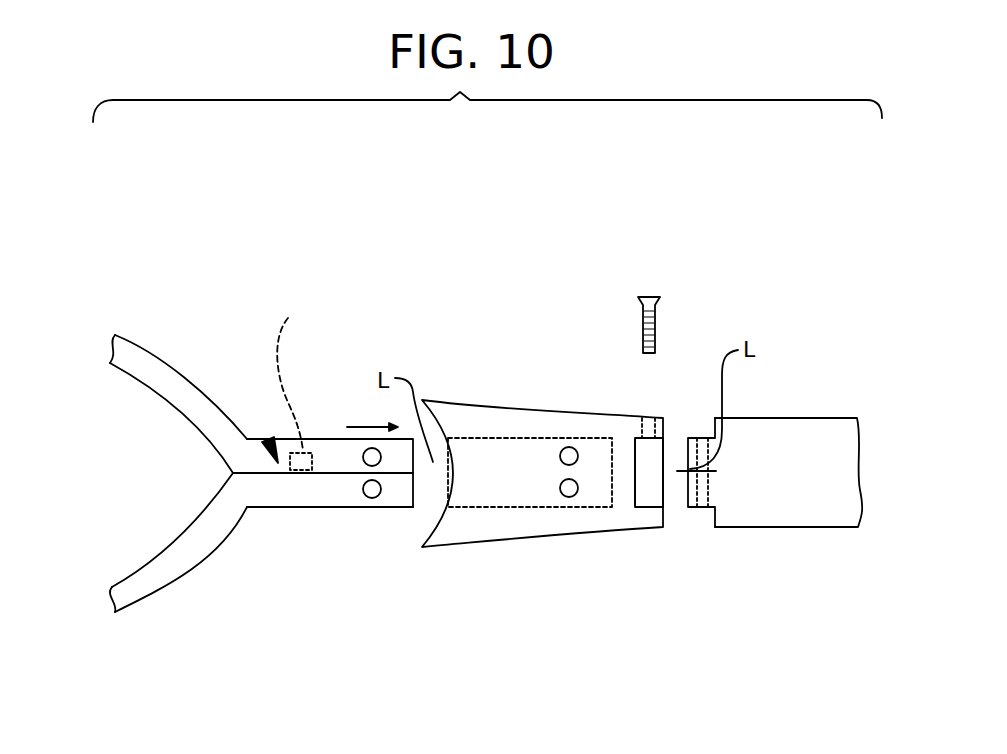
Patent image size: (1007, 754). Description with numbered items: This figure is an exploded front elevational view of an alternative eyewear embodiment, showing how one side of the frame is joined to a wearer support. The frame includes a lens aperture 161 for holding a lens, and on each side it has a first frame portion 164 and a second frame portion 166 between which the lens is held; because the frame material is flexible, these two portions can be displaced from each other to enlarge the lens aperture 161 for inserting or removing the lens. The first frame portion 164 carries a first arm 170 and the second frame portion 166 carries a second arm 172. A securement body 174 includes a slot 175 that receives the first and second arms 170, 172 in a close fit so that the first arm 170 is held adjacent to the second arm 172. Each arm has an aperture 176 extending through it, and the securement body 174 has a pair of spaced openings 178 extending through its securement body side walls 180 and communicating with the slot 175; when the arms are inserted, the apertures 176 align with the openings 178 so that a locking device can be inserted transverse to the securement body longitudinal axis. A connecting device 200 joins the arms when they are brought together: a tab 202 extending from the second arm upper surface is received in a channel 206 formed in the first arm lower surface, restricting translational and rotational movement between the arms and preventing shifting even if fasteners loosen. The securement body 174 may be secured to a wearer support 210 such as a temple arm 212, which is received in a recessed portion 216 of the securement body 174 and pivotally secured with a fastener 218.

The lens aperture 161 is at (180, 465).
The first frame portion 164 is at (152, 373).
The second frame portion 166 is at (180, 568).
The first arm 170 is at (328, 438).
The second arm 172 is at (282, 510).
The securement body 174 is at (628, 528).
The slot 175 is at (498, 457).
The aperture 176 is at (372, 490).
The spaced openings 178 is at (569, 492).
The securement body side walls 180 is at (508, 538).
The connecting device 200 is at (270, 440).
The tab 202 is at (301, 471).
The channel 206 is at (289, 371).
The wearer support 210 is at (825, 415).
The temple arm 212 is at (845, 527).
The recessed portion 216 is at (649, 492).
The fastener 218 is at (655, 297).